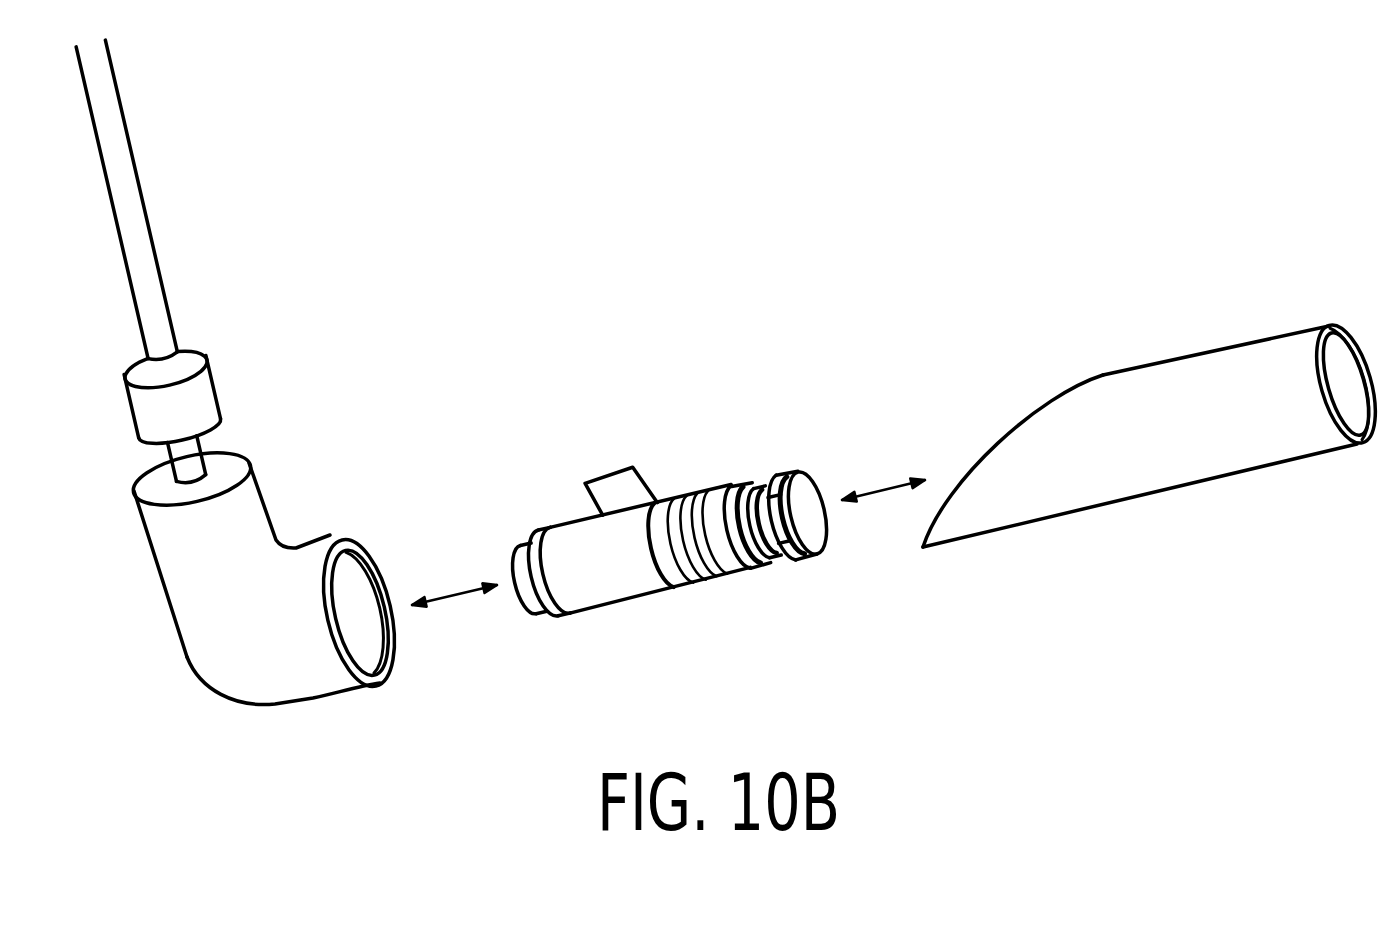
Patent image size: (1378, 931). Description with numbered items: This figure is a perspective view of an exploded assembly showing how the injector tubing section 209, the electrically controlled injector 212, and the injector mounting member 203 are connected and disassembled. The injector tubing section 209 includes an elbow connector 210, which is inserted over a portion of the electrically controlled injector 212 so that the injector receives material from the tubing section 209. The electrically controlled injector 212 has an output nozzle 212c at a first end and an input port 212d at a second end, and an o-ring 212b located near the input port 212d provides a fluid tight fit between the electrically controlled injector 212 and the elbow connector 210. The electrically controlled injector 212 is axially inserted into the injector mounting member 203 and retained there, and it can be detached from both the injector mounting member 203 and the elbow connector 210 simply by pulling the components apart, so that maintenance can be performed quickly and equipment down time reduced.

The injector mounting member 203 is at (1105, 377).
The injector tubing section 209 is at (138, 178).
The elbow connector 210 is at (300, 540).
The electrically controlled injector 212 is at (675, 542).
The o-ring 212b is at (530, 547).
The output nozzle 212c is at (844, 471).
The input port 212d is at (507, 609).